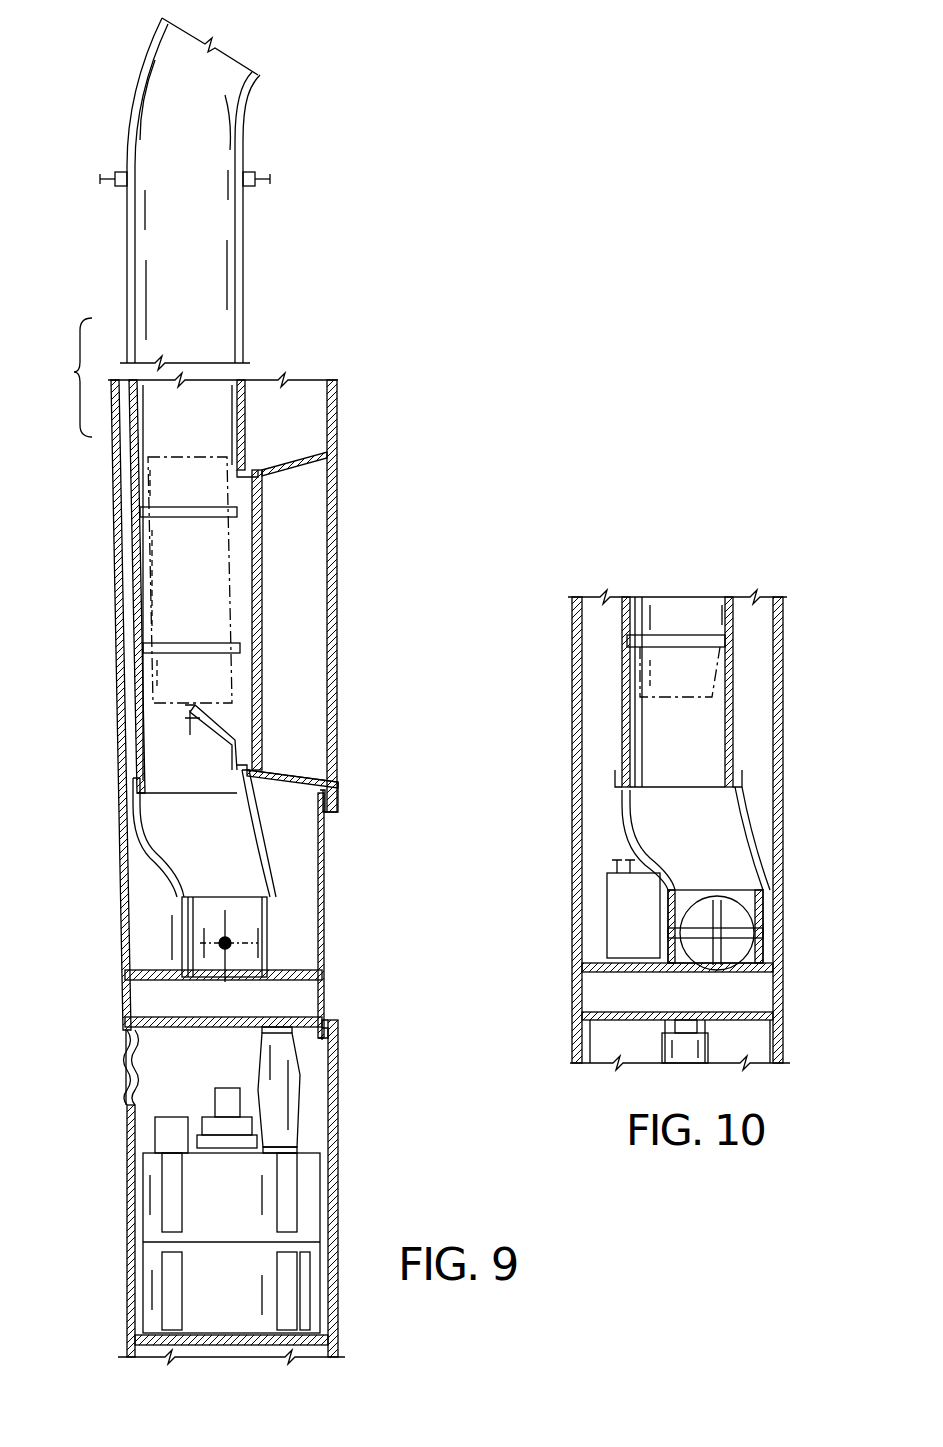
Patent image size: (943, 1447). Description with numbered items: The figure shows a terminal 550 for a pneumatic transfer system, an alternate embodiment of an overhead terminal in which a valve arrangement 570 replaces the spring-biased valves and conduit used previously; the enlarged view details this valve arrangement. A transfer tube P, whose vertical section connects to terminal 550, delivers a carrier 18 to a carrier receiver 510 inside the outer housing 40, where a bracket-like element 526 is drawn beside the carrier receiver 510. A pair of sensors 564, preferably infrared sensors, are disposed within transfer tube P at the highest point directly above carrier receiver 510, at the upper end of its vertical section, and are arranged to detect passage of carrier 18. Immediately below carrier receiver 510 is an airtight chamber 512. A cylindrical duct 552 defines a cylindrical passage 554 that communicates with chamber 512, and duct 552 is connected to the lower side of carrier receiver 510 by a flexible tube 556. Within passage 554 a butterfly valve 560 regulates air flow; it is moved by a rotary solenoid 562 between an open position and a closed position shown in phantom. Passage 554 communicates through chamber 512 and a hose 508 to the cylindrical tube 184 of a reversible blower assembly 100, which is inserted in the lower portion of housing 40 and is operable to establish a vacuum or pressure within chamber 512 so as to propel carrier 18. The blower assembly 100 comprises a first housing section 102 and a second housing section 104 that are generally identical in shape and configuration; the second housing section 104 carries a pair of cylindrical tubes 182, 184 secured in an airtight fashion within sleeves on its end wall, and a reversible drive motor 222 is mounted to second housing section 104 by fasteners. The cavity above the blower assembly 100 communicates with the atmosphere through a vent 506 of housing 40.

In FIG. 9, the transfer tube P is at (247, 249).
In FIG. 9, the sensors 564 is at (118, 172).
In FIG. 9, the terminal 550 is at (412, 487).
In FIG. 9, the carrier receiver 510 is at (130, 678).
In FIG. 10, the carrier receiver 510 is at (738, 660).
In FIG. 9, the carrier 18 is at (232, 598).
In FIG. 10, the carrier 18 is at (735, 625).
In FIG. 9, the bracket 526 is at (182, 722).
In FIG. 9, the flexible tube 556 is at (262, 857).
In FIG. 10, the flexible tube 556 is at (757, 830).
In FIG. 9, the cylindrical duct 552 is at (268, 928).
In FIG. 10, the cylindrical duct 552 is at (762, 918).
In FIG. 9, the cylindrical passage 554 is at (250, 958).
In FIG. 10, the cylindrical passage 554 is at (765, 958).
In FIG. 9, the valve arrangement 570 is at (172, 935).
In FIG. 9, the outer housing 40 is at (326, 935).
In FIG. 10, the outer housing 40 is at (572, 719).
In FIG. 9, the butterfly valve 560 is at (215, 963).
In FIG. 10, the butterfly valve 560 is at (735, 905).
In FIG. 9, the airtight chamber 512 is at (305, 1003).
In FIG. 10, the airtight chamber 512 is at (765, 996).
In FIG. 9, the vent 506 is at (127, 1047).
In FIG. 9, the reversible drive motor 222 is at (216, 1107).
In FIG. 9, the cylindrical tube 182 is at (162, 1137).
In FIG. 9, the cylindrical tube 184 is at (292, 1136).
In FIG. 9, the second housing section 104 is at (142, 1207).
In FIG. 9, the reversible blower assembly 100 is at (326, 1215).
In FIG. 9, the first housing section 102 is at (140, 1285).
In FIG. 9, the hose 508 is at (305, 1088).
In FIG. 10, the hose 508 is at (692, 1054).
In FIG. 10, the rotary solenoid 562 is at (617, 905).